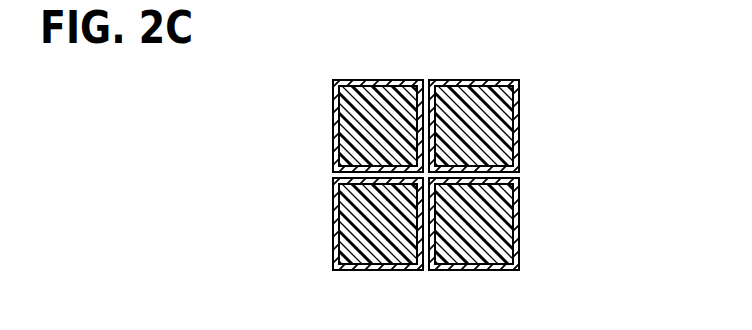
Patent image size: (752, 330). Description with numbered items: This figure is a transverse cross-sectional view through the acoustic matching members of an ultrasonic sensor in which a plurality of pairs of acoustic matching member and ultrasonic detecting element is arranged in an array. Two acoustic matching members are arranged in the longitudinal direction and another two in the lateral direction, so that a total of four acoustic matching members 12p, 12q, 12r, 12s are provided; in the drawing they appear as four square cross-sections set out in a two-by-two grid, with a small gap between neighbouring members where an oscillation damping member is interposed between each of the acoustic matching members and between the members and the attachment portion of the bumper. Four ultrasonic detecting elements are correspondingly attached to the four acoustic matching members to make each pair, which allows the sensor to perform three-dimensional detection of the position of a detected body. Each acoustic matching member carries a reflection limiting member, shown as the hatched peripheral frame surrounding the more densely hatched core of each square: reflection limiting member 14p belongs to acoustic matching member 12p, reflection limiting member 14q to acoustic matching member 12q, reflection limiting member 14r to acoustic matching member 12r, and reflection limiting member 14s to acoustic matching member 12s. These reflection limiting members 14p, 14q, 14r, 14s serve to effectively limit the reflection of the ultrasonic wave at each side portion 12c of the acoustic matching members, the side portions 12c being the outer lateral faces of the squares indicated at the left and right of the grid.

The acoustic matching member 12r is at (354, 96).
The acoustic matching member 12s is at (454, 96).
The acoustic matching member 12p is at (360, 250).
The acoustic matching member 12q is at (465, 250).
The reflection limiting member 14r is at (386, 80).
The reflection limiting member 14s is at (488, 80).
The reflection limiting member 14p is at (405, 268).
The reflection limiting member 14q is at (511, 268).
The side portion 12c is at (336, 119).